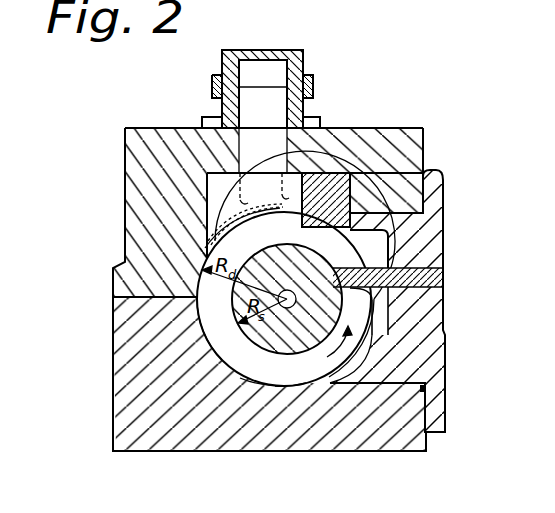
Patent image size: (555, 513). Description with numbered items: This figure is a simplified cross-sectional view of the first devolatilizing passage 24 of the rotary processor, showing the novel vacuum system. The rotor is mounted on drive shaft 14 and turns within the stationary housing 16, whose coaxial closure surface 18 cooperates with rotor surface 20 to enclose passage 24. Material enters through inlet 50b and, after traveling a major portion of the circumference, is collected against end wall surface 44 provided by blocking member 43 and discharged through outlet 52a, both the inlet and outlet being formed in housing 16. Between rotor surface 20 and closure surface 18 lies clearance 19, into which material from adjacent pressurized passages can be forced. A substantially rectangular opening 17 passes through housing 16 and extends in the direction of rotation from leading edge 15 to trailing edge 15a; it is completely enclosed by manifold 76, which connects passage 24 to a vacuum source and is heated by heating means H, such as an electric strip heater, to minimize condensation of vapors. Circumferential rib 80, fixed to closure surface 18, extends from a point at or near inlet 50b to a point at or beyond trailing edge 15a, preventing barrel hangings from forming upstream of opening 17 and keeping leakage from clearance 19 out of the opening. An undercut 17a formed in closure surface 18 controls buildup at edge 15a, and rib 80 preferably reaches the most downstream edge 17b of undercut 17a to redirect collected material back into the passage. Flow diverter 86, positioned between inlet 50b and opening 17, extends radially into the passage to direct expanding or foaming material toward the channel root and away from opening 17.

The drive shaft 14 is at (298, 243).
The leading edge 15 is at (254, 188).
The trailing edge 15a is at (233, 193).
The housing 16 is at (158, 438).
The opening 17 is at (257, 152).
The undercut 17a is at (233, 216).
The most downstream edge 17b is at (213, 245).
The closure surface 18 is at (272, 382).
The clearance 19 is at (206, 380).
The rotor surface 20 is at (288, 388).
The first devolatilizing passage 24 is at (212, 315).
The blocking member 43 is at (427, 278).
The end wall surface 44 is at (390, 293).
The inlet 50b is at (380, 257).
The outlet 52a is at (372, 342).
The manifold 76 is at (313, 84).
The circumferential rib 80 is at (300, 180).
The flow diverter 86 is at (335, 173).
The heating means H is at (212, 86).